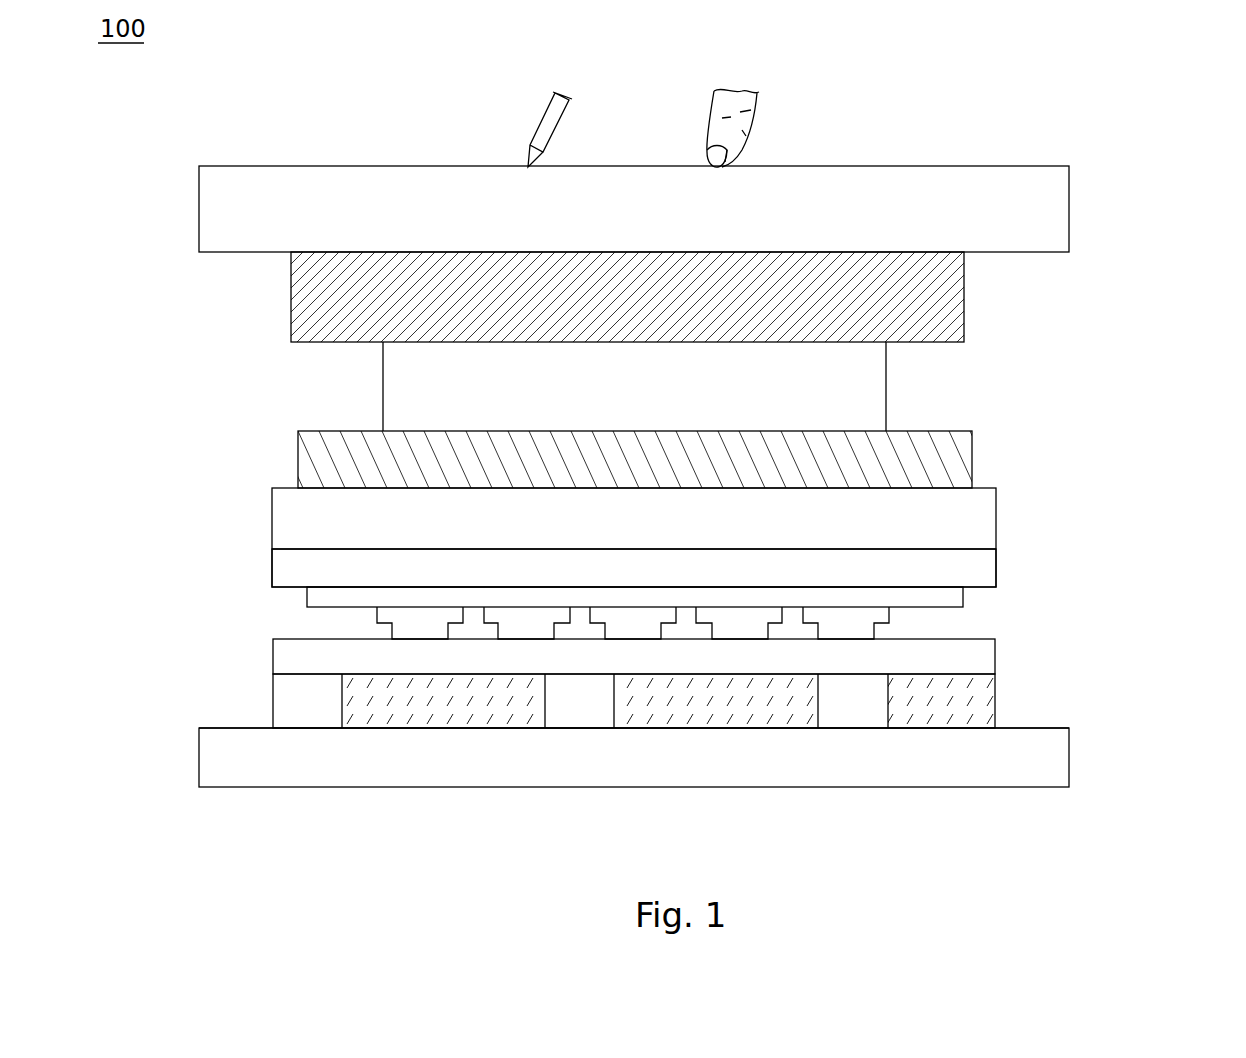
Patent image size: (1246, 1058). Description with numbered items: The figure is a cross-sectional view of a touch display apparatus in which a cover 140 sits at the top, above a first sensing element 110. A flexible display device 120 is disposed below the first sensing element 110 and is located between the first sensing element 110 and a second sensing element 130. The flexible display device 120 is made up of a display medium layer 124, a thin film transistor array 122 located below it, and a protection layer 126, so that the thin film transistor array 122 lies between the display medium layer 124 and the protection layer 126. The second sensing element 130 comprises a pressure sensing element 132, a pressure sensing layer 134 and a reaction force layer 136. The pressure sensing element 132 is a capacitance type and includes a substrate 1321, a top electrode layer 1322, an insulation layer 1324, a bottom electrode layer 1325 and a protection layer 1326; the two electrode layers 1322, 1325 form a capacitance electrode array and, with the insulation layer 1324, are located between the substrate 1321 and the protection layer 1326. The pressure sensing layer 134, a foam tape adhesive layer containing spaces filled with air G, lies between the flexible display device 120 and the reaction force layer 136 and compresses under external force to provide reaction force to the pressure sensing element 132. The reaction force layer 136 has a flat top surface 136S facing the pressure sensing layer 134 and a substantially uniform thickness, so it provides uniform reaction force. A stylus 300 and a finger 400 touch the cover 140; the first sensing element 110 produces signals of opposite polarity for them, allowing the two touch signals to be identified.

The first sensing element 110 is at (957, 302).
The flexible display device 120 is at (724, 464).
The thin film transistor array 122 is at (965, 458).
The display medium layer 124 is at (886, 384).
The protection layer 126 is at (690, 537).
The second sensing element 130 is at (721, 697).
The pressure sensing element 132 is at (725, 634).
The substrate 1321 is at (996, 568).
The top electrode layer 1322 is at (955, 598).
The insulation layer 1324 is at (878, 612).
The bottom electrode layer 1325 is at (872, 627).
The protection layer 1326 is at (691, 692).
The pressure sensing layer 134 is at (862, 717).
The reaction force layer 136 is at (1069, 750).
The flat top surface 136S is at (460, 728).
The cover 140 is at (1069, 208).
The stylus 300 is at (546, 123).
The finger 400 is at (712, 101).
The air G is at (717, 720).